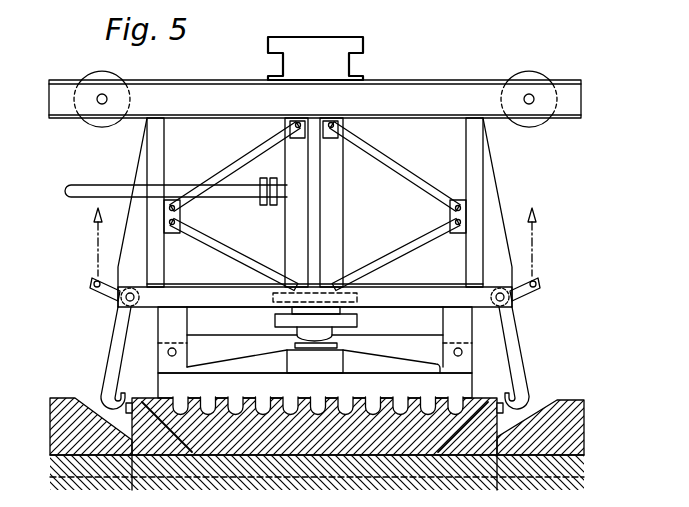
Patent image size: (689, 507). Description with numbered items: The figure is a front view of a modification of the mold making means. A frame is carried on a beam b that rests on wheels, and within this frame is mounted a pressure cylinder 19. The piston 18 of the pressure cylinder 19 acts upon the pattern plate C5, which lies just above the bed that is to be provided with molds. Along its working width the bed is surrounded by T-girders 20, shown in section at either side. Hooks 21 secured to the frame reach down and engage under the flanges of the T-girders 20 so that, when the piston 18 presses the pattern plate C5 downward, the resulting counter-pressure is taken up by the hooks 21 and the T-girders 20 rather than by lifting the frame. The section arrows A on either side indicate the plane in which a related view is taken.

The beam b is at (315, 82).
The pressure cylinder 19 is at (335, 213).
The piston 18 is at (318, 334).
The pattern plate C5 is at (315, 386).
The hooks 21 is at (117, 351).
The T-girders 20 is at (130, 424).
The section line arrow A is at (315, 242).